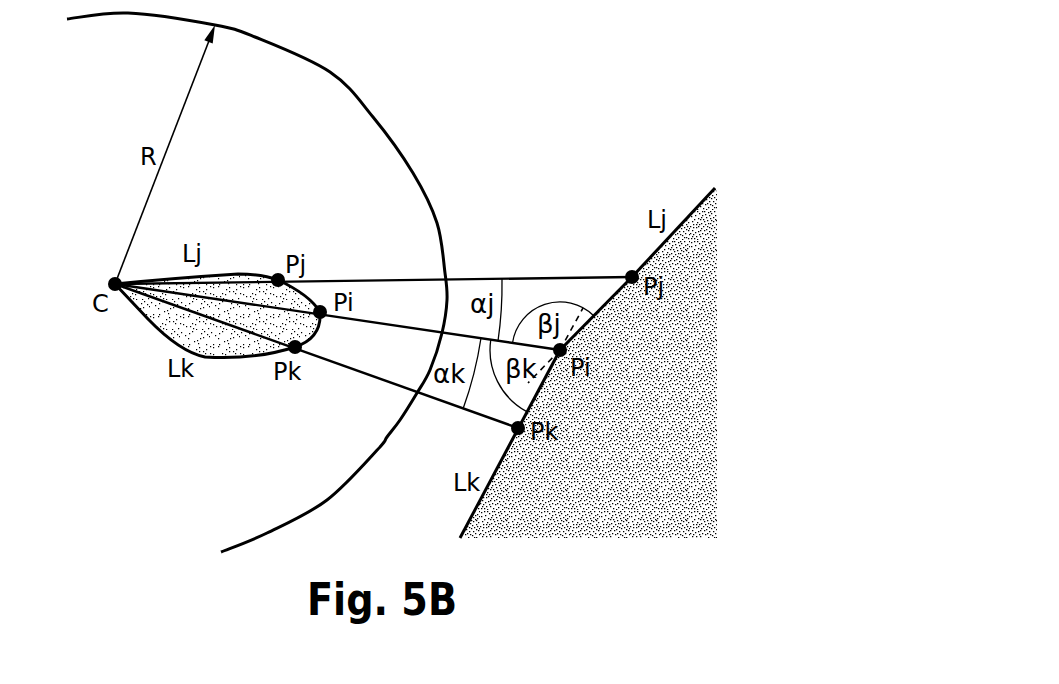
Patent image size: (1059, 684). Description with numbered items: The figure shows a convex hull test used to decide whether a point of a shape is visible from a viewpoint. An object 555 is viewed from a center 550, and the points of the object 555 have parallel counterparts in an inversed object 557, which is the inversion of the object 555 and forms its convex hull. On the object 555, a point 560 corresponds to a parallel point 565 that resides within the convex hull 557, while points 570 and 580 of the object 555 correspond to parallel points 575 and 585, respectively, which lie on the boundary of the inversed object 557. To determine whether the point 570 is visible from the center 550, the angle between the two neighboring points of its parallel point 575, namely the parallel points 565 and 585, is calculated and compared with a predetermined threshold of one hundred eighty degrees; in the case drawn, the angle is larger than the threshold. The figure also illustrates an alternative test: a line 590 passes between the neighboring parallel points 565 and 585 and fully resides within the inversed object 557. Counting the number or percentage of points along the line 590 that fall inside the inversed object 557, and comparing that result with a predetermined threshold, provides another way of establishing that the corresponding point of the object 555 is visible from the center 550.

The center 550 is at (116, 290).
The object 555 is at (172, 326).
The point 560 is at (238, 270).
The point 570 is at (323, 320).
The point 580 is at (298, 352).
The inversed object 557 is at (697, 205).
The parallel point 575 is at (586, 318).
The parallel point 565 is at (632, 270).
The parallel point 585 is at (511, 431).
The line 590 is at (586, 343).